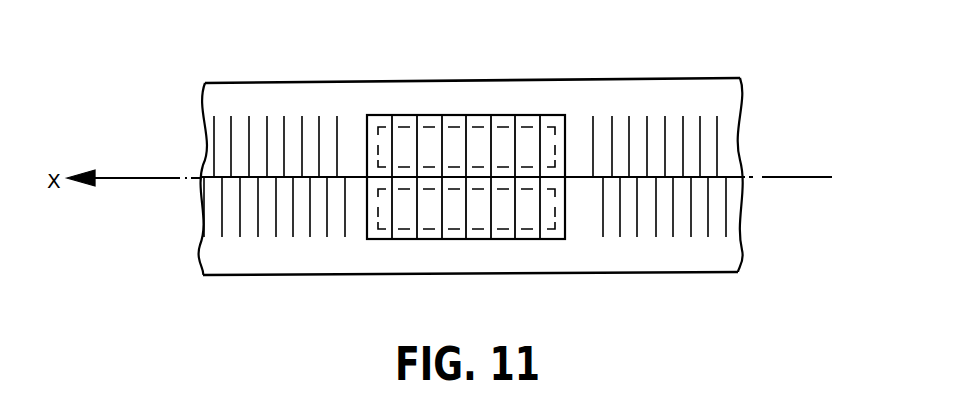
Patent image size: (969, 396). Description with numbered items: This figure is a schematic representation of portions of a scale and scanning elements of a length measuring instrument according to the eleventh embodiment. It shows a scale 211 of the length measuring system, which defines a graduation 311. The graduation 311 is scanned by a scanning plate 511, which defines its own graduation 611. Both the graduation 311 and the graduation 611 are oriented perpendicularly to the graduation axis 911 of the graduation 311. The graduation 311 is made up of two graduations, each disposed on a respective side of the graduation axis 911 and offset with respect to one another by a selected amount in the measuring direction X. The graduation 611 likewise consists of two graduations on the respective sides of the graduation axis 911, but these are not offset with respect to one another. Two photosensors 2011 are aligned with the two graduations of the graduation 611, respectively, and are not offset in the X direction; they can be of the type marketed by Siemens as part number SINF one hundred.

The scale 211 is at (725, 261).
The graduation 311 is at (823, 122).
The scanning plate 511 is at (367, 213).
The graduation 611 is at (517, 133).
The graduation axis 911 is at (778, 173).
The photosensors 2011 is at (467, 297).